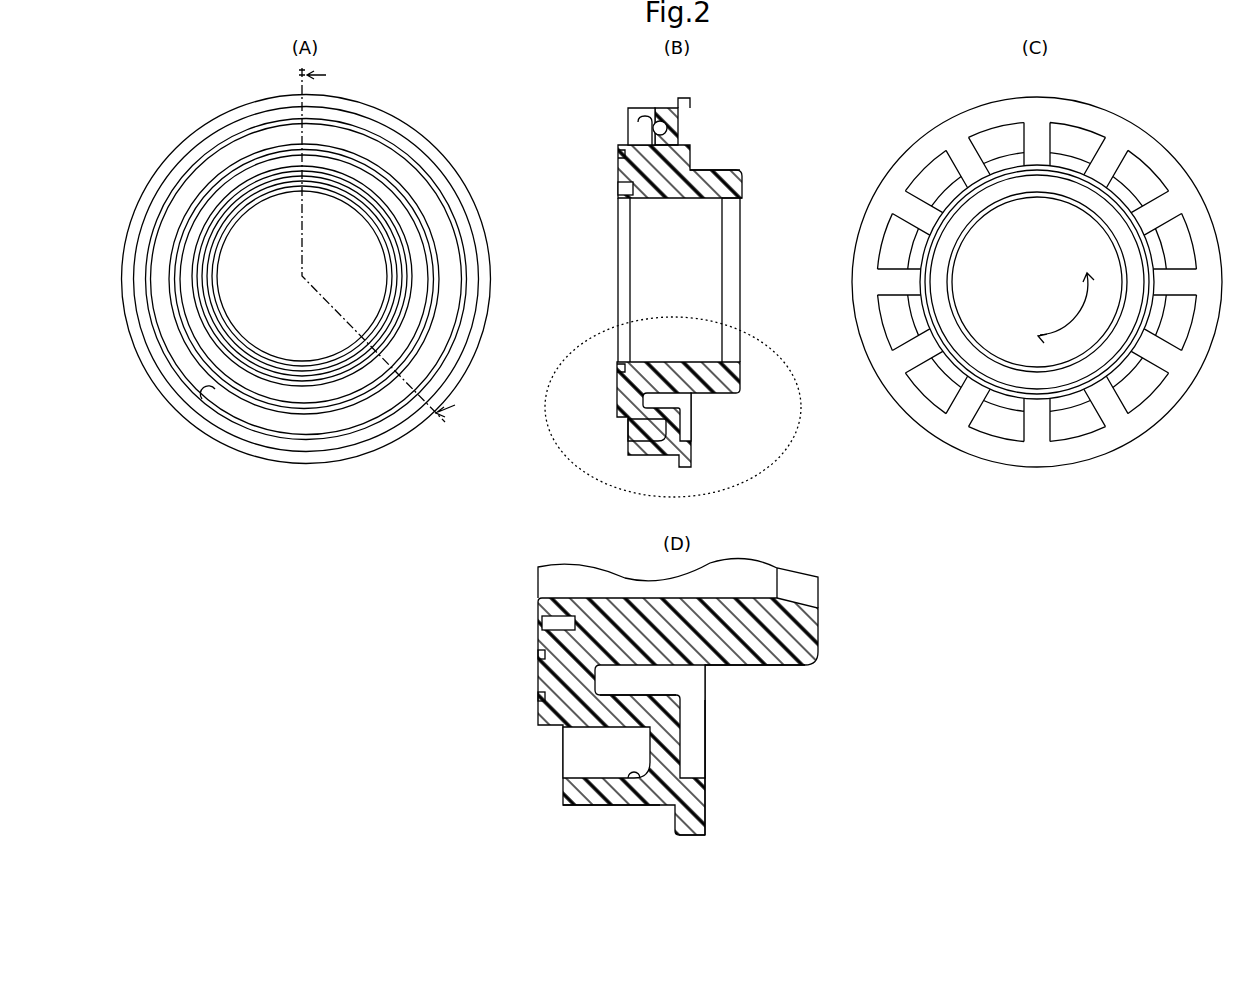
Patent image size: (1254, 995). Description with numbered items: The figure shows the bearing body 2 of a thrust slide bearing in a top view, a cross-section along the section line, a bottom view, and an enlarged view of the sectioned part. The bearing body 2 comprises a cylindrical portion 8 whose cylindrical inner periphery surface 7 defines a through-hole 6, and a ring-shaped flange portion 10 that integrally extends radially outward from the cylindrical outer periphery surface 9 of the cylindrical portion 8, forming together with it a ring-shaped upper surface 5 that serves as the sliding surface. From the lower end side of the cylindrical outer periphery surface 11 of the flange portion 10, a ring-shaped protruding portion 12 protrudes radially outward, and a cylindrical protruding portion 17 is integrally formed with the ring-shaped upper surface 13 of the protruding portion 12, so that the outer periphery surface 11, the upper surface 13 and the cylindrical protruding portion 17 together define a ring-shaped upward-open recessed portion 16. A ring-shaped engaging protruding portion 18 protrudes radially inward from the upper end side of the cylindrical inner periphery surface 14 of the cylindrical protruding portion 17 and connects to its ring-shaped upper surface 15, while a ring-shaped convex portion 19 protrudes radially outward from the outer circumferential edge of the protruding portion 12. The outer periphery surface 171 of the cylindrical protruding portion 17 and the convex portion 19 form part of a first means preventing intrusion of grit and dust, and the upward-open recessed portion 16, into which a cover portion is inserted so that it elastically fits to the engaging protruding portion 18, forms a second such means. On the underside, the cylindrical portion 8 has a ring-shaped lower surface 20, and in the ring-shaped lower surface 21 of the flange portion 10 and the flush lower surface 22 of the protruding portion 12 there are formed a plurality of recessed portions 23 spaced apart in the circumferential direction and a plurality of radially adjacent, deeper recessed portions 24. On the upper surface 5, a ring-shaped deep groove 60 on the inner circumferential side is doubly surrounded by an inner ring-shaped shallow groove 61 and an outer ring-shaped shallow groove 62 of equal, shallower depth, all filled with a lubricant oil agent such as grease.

The bearing body 2 is at (760, 276).
The ring-shaped upper surface 5 is at (613, 177).
The through-hole 6 is at (268, 218).
The cylindrical inner periphery surface 7 is at (227, 290).
The cylindrical portion 8 is at (742, 180).
The cylindrical outer periphery surface 9 is at (713, 167).
The ring-shaped flange portion 10 is at (618, 152).
The cylindrical outer periphery surface 11 is at (395, 173).
The ring-shaped protruding portion 12 is at (690, 126).
The ring-shaped upper surface 13 is at (660, 119).
The cylindrical inner periphery surface 14 is at (633, 119).
The ring-shaped upper surface 15 is at (630, 105).
The upward-open recessed portion 16 is at (432, 203).
The cylindrical protruding portion 17 is at (664, 460).
The outer periphery surface 171 is at (392, 127).
The ring-shaped engaging protruding portion 18 is at (204, 397).
The ring-shaped convex portion 19 is at (490, 276).
The ring-shaped lower surface 20 is at (746, 376).
The ring-shaped lower surface 21 is at (700, 418).
The lower surface 22 is at (1124, 119).
The recessed portions 23 is at (695, 437).
The recessed portions 24 is at (683, 402).
The ring-shaped deep groove 60 is at (406, 272).
The inner ring-shaped shallow groove 61 is at (426, 292).
The outer ring-shaped shallow groove 62 is at (410, 336).